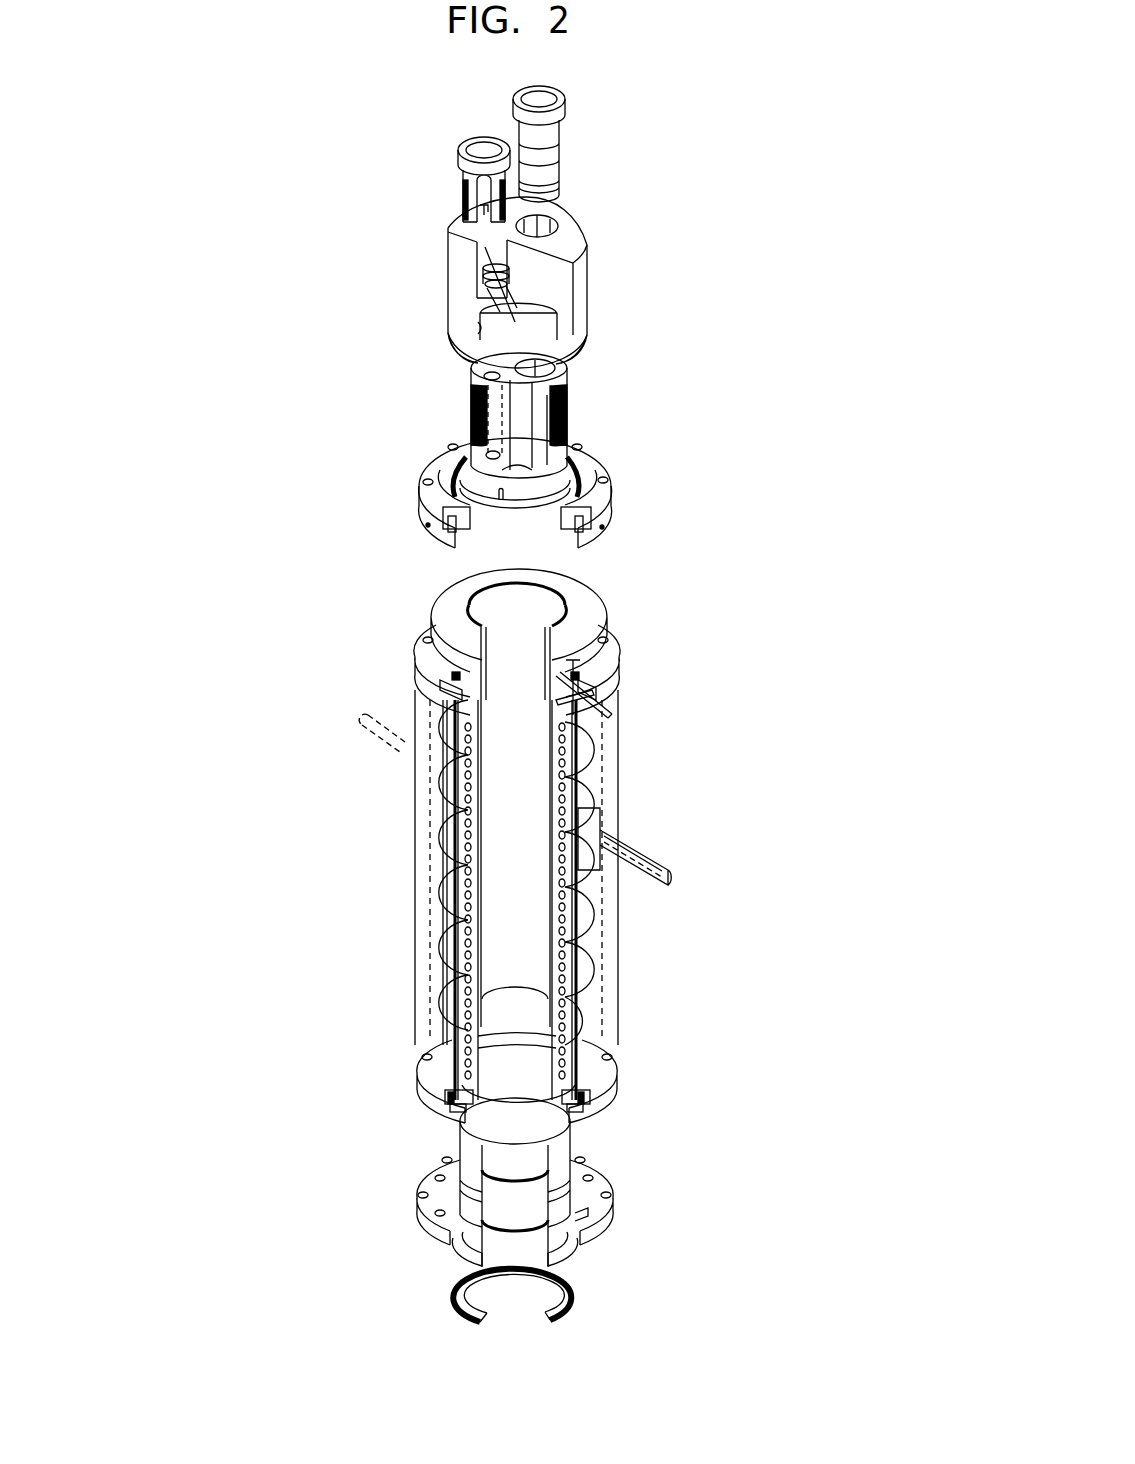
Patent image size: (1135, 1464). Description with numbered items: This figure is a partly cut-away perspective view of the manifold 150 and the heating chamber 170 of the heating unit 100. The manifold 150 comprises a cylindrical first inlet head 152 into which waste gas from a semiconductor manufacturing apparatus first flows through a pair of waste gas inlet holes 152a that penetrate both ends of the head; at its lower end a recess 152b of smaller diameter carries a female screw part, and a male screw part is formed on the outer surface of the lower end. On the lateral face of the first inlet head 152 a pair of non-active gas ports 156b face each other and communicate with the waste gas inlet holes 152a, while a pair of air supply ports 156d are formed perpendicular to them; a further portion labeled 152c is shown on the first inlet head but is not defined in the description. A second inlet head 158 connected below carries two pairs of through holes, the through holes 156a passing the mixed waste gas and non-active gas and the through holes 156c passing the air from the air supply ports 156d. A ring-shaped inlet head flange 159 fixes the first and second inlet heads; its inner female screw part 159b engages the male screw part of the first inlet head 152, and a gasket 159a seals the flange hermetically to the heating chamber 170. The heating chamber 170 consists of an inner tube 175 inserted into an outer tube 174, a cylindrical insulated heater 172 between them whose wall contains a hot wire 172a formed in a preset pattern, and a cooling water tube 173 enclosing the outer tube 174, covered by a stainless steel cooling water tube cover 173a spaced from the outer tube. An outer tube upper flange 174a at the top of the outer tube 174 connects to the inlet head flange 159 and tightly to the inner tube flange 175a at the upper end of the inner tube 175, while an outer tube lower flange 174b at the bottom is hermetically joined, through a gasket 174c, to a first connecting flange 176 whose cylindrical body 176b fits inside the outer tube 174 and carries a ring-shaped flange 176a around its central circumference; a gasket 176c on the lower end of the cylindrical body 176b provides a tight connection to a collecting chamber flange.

The heating unit 100 is at (762, 201).
The manifold 150 is at (660, 323).
The first inlet head 152 is at (588, 263).
The waste gas inlet holes 152a is at (485, 247).
The recess 152b is at (473, 262).
The lower cavity of head block 152c is at (467, 315).
The through holes 156a is at (468, 358).
The non-active gas ports 156b is at (473, 297).
The through holes 156c is at (540, 373).
The air supply port 156d is at (572, 355).
The second inlet head 158 is at (565, 407).
The inlet head flange 159 is at (610, 455).
The gasket 159a is at (612, 540).
The female screw part 159b is at (480, 470).
The heating chamber 170 is at (290, 907).
The heater 172 is at (468, 785).
The hot wire 172a is at (468, 843).
The cooling water tube 173 is at (610, 752).
The cooling water tube cover 173a is at (435, 688).
The outer tube 174 is at (600, 1020).
The outer tube upper flange 174a is at (565, 680).
The outer tube lower flange 174b is at (450, 1097).
The gasket 174c is at (447, 1107).
The inner tube 175 is at (560, 650).
The inner tube flange 175a is at (590, 590).
The first connecting flange 176 is at (397, 1208).
The ring-shaped flange 176a is at (615, 1212).
The cylindrical body 176b is at (517, 1145).
The gasket 176c is at (572, 1305).